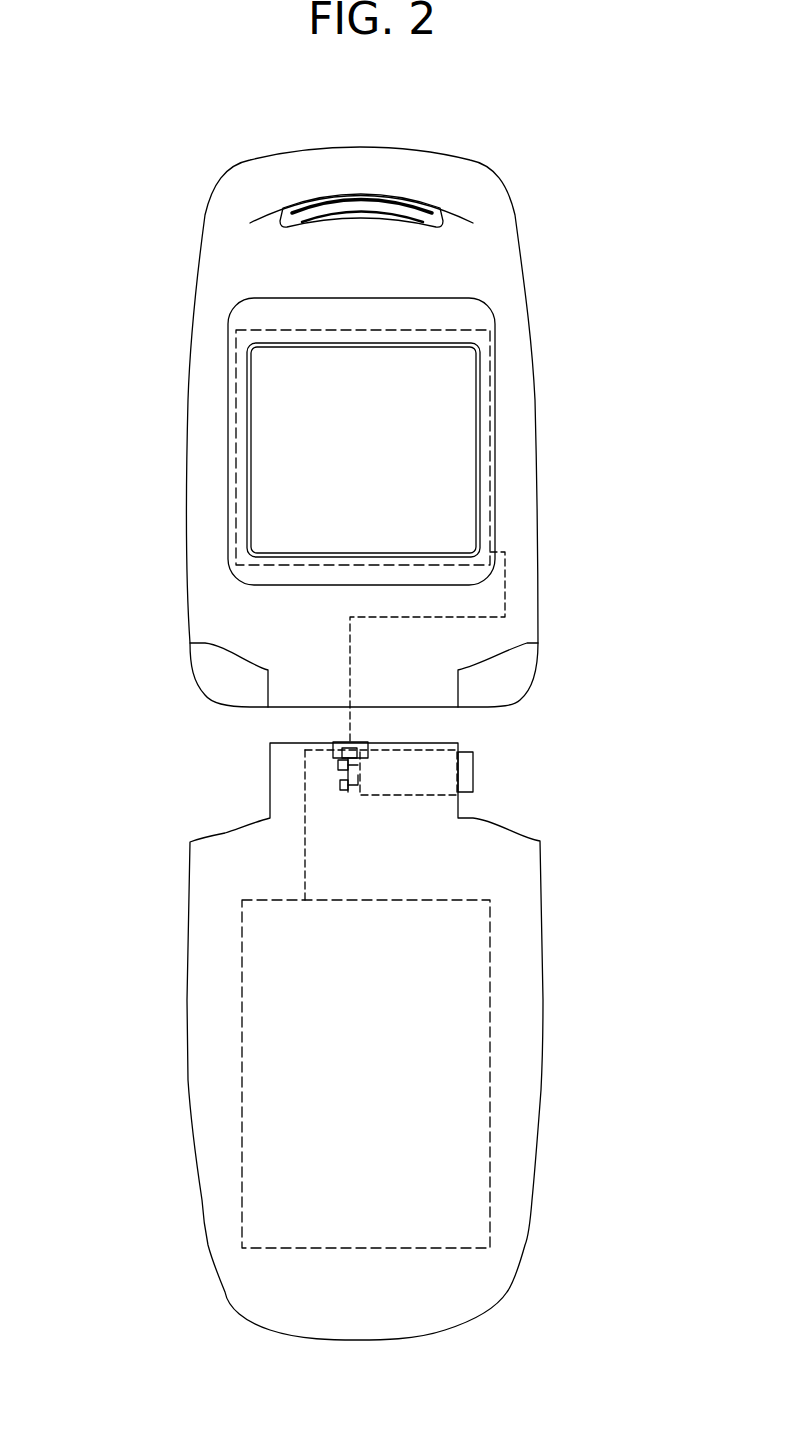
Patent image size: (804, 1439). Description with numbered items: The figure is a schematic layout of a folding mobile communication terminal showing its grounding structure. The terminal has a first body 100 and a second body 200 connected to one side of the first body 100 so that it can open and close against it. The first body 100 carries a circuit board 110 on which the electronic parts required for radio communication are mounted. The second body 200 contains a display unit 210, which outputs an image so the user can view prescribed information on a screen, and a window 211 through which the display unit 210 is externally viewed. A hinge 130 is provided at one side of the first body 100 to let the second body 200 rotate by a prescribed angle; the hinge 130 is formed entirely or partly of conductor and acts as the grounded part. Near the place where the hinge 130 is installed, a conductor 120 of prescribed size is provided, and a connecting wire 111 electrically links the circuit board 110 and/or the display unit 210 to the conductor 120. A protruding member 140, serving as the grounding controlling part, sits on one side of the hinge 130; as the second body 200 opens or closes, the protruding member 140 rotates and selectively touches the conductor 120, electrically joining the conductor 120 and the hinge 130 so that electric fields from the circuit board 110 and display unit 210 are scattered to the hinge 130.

The first body 100 is at (552, 928).
The circuit board 110 is at (242, 1002).
The connecting wire 111 is at (350, 636).
The conductor 120 is at (338, 744).
The hinge 130 is at (486, 771).
The protruding member 140 is at (347, 770).
The second body 200 is at (545, 318).
The display unit 210 is at (237, 399).
The window 211 is at (268, 468).